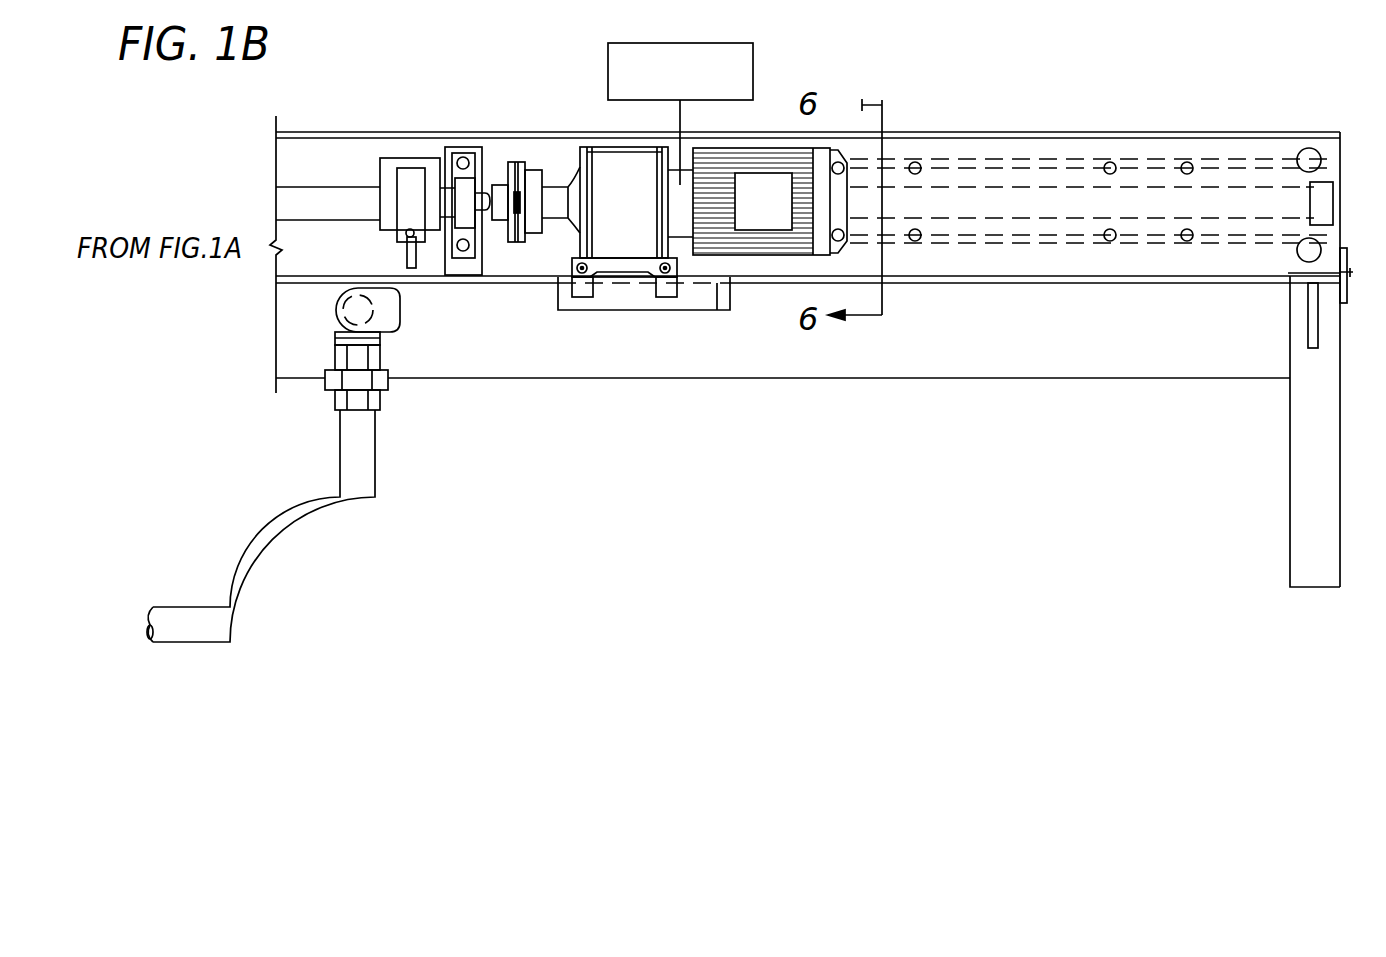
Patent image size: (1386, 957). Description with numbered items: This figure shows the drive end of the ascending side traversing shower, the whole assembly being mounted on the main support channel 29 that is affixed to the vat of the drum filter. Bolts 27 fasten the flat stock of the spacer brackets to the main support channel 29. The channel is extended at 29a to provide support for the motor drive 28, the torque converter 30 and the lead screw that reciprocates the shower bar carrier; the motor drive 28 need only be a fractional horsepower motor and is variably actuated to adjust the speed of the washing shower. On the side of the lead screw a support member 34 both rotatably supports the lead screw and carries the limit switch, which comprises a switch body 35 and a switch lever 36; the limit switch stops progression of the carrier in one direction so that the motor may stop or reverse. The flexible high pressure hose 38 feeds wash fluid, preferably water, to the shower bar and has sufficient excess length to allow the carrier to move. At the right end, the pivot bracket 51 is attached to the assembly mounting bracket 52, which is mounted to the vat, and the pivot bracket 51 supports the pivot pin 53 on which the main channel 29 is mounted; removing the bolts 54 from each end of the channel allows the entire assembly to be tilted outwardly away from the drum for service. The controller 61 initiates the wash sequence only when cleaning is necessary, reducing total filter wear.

The bolts 27 is at (915, 162).
The motor drive 28 is at (707, 148).
The main support channel 29 is at (1003, 133).
The channel extension 29a is at (717, 310).
The torque converter 30 is at (519, 163).
The support members 34 is at (476, 178).
The switch body 35 is at (393, 168).
The switch lever 36 is at (405, 262).
The flexible hose 38 is at (352, 522).
The pivot bracket 51 is at (1345, 255).
The assembly mounting bracket 52 is at (1310, 534).
The pivot pin 53 is at (1353, 273).
The bolts 54 is at (1305, 240).
The controller 61 is at (712, 43).